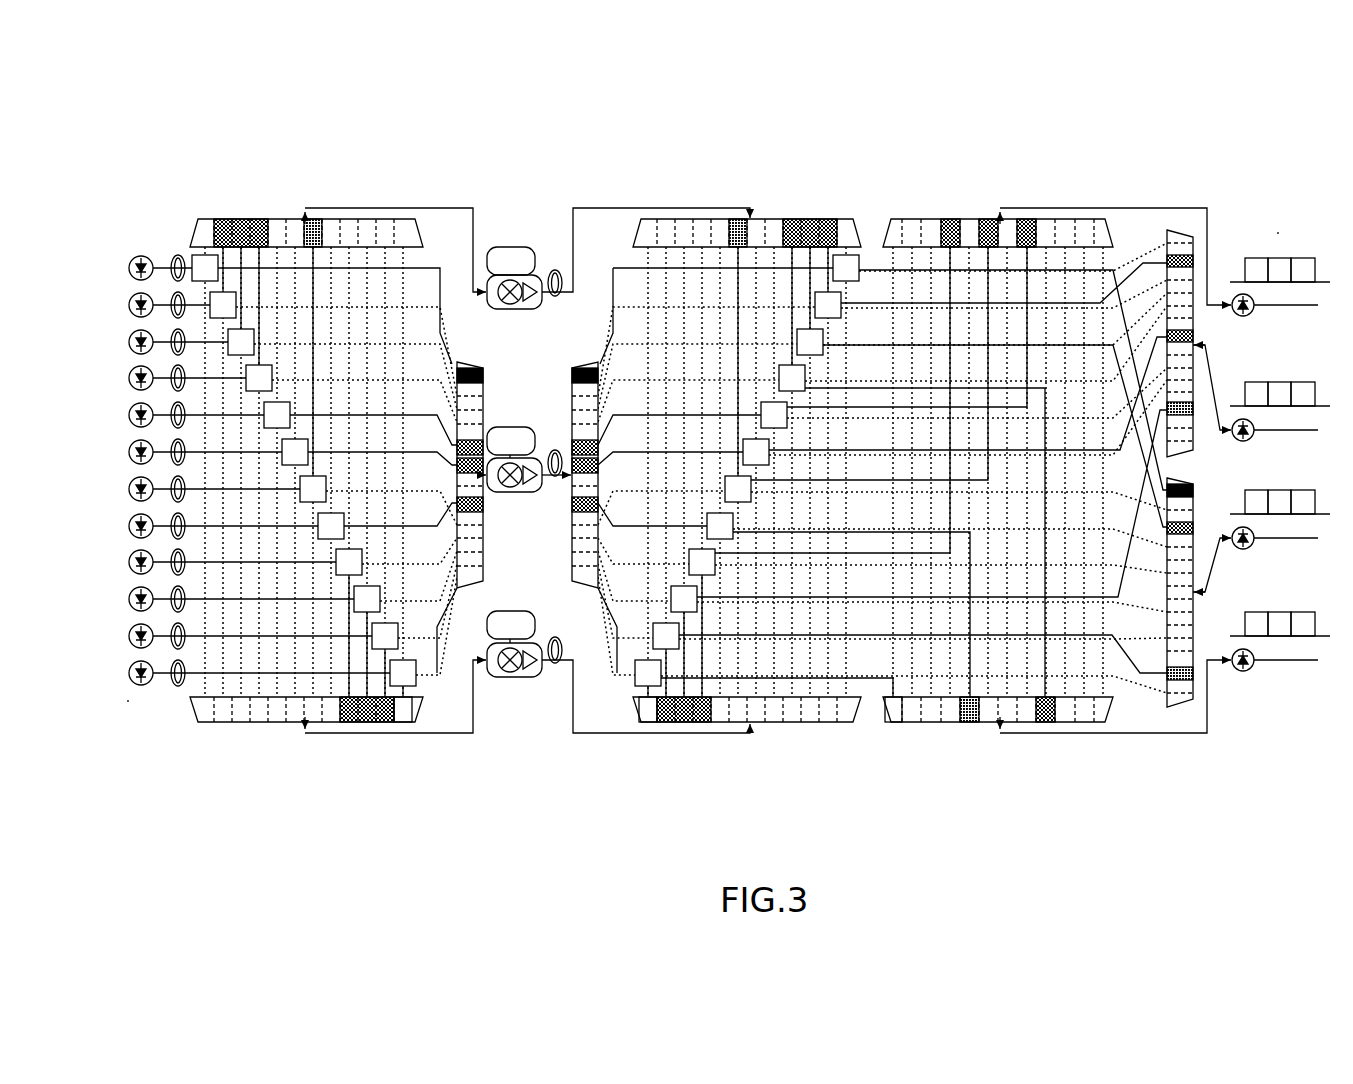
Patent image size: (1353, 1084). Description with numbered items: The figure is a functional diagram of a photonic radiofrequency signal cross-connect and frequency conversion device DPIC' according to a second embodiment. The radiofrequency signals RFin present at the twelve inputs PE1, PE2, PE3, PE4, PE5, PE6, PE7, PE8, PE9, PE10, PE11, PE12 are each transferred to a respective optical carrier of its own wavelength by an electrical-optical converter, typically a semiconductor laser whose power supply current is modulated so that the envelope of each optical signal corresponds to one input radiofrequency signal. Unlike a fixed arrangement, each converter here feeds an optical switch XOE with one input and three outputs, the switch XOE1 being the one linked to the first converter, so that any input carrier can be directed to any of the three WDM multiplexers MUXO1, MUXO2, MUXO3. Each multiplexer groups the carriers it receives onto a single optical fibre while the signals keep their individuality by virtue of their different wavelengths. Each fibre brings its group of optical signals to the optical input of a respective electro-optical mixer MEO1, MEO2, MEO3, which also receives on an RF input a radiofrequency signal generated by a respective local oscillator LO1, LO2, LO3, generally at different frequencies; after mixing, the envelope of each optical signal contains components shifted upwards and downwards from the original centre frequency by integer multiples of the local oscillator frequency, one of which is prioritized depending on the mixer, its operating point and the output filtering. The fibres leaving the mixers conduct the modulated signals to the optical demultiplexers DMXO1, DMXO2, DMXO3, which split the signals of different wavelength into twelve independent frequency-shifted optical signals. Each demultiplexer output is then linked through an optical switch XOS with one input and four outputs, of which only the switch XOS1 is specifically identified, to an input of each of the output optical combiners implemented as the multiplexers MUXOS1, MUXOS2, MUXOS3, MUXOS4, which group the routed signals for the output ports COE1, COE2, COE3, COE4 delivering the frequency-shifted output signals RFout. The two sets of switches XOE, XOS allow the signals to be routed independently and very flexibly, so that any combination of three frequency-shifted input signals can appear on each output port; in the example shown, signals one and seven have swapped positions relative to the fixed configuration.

The input PE1 is at (130, 278).
The input PE2 is at (130, 315).
The input PE3 is at (130, 352).
The input PE4 is at (130, 388).
The input PE5 is at (130, 425).
The input PE6 is at (130, 462).
The input PE7 is at (130, 499).
The input PE8 is at (130, 536).
The input PE9 is at (130, 572).
The input PE10 is at (130, 609).
The input PE11 is at (130, 646).
The input PE12 is at (130, 683).
The optical switch XOE1 is at (200, 255).
The optical switches XOE is at (312, 551).
The first multiplexer MUXO1 is at (260, 218).
The second multiplexer MUXO2 is at (468, 364).
The third multiplexer MUXO3 is at (236, 722).
The local oscillator LO1 is at (510, 247).
The local oscillator LO2 is at (511, 427).
The local oscillator LO3 is at (511, 611).
The electro-optical mixer MEO1 is at (512, 309).
The electro-optical mixer MEO2 is at (512, 493).
The electro-optical mixer MEO3 is at (512, 678).
The optical demultiplexer DMXO1 is at (785, 219).
The optical demultiplexer DMXO2 is at (583, 592).
The optical demultiplexer DMXO3 is at (800, 725).
The optical switch XOS1 is at (852, 255).
The optical switches XOS is at (767, 483).
The output multiplexer MUXOS1 is at (985, 219).
The output multiplexer MUXOS2 is at (1196, 320).
The output multiplexer MUXOS3 is at (1196, 632).
The output multiplexer MUXOS4 is at (940, 723).
The optoelectronic converter 1 COE1 is at (1253, 313).
The optoelectronic converter 2 COE2 is at (1253, 438).
The optoelectronic converter 3 COE3 is at (1253, 546).
The optoelectronic converter 4 COE4 is at (1253, 668).
The radiofrequency input signal RFin is at (137, 710).
The RF output signals RFout is at (1279, 230).
The photonic cross-connect and frequency conversion device DPIC' is at (331, 563).